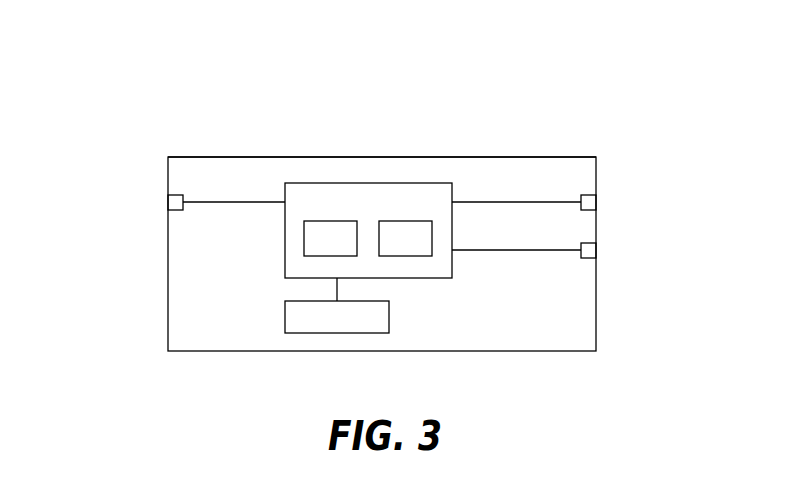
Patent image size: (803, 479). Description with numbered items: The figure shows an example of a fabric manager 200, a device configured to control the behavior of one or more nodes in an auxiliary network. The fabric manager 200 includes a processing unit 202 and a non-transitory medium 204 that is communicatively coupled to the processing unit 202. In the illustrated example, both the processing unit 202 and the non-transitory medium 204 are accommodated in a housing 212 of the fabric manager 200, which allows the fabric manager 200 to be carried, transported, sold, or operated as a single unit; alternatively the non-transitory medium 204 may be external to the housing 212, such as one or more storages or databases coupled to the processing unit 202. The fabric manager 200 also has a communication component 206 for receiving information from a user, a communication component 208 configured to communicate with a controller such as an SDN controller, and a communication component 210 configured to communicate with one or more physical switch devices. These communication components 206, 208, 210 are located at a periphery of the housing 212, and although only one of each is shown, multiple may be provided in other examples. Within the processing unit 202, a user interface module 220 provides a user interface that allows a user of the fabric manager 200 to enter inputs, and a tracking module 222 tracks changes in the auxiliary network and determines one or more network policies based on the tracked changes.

The fabric manager 200 is at (122, 145).
The processing unit 202 is at (328, 211).
The non-transitory medium 204 is at (351, 326).
The communication component 206 is at (168, 202).
The communication component 208 is at (597, 200).
The communication component 210 is at (597, 248).
The housing 212 is at (533, 157).
The user interface module 220 is at (344, 247).
The tracking module 222 is at (419, 247).